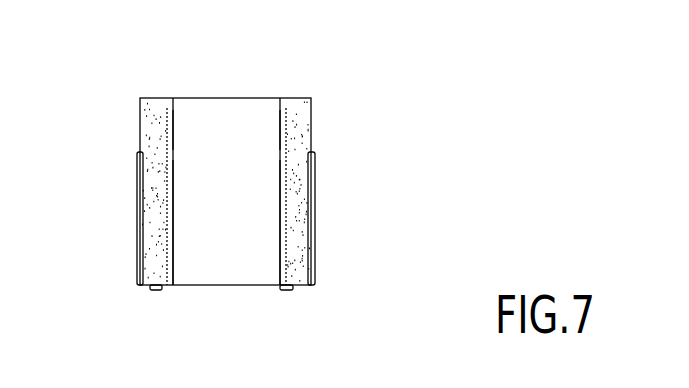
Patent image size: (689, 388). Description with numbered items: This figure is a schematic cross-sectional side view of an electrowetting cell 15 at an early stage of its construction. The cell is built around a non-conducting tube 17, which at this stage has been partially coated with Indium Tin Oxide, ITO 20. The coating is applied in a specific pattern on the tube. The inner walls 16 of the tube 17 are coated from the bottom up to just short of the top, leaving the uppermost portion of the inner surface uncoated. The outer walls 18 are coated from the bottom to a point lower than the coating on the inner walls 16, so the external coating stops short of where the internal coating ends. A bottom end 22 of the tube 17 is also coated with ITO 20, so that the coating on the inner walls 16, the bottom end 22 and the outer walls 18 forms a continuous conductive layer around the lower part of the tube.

The electrowetting cell 15 is at (315, 192).
The inner walls 16 is at (277, 133).
The non-conducting tube 17 is at (302, 95).
The outer walls 18 is at (140, 115).
The ITO 20 is at (152, 288).
The bottom end 22 is at (157, 290).